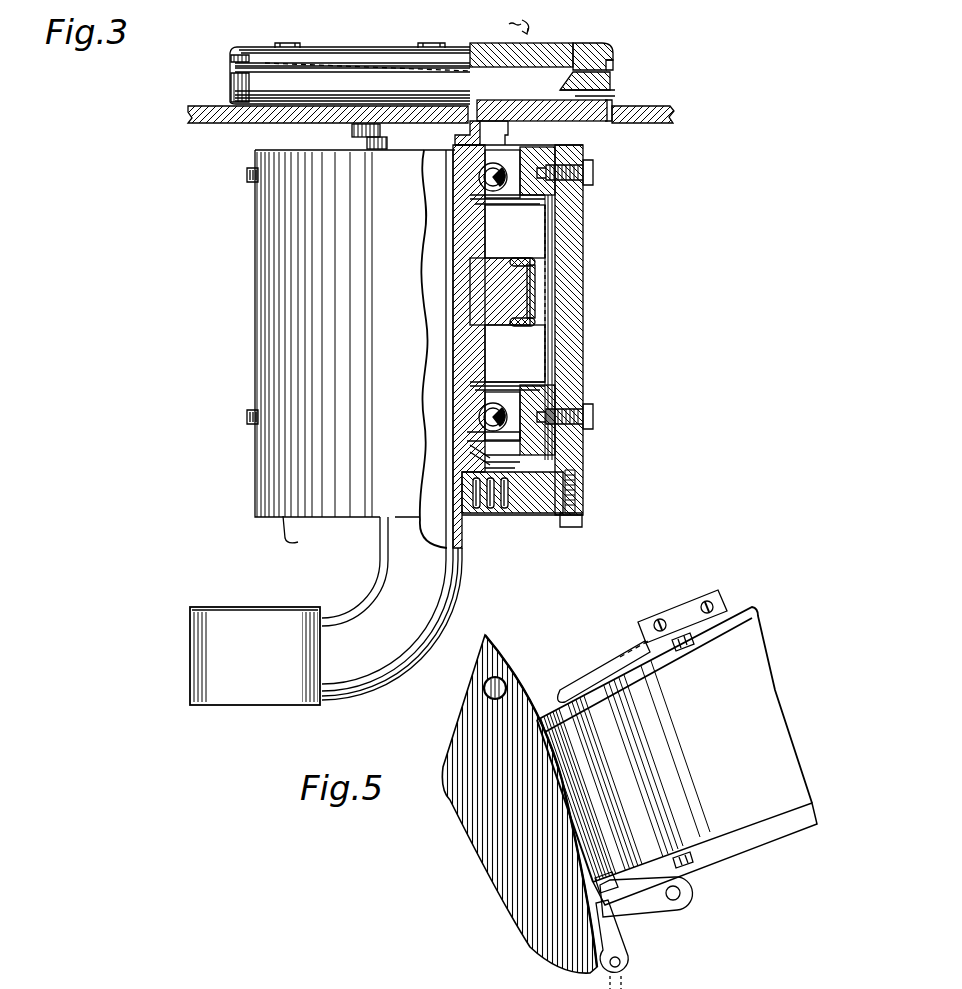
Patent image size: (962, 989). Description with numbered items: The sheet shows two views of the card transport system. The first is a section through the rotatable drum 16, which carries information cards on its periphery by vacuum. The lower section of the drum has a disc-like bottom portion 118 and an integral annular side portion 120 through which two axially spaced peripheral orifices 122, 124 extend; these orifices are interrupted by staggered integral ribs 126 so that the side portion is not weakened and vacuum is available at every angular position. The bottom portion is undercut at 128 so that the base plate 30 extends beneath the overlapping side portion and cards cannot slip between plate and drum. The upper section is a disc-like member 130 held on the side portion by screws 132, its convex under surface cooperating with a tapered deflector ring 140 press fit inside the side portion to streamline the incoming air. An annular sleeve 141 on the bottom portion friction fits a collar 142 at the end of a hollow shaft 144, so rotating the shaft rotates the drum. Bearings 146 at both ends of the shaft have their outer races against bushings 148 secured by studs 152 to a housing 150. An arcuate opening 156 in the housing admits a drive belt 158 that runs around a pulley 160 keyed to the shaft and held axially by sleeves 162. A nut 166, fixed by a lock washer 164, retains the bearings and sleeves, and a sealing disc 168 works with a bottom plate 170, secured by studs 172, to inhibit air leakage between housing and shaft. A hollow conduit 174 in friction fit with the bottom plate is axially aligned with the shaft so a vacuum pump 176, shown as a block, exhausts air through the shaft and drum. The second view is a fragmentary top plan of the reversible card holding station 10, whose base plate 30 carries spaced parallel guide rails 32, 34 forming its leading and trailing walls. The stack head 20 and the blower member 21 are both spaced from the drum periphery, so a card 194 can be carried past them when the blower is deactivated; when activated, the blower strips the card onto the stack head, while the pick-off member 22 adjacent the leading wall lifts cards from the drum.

In FIG. 5, the reversible card holding station 10 is at (774, 755).
In FIG. 3, the drum 16 is at (517, 20).
In FIG. 5, the drum 16 is at (527, 945).
In FIG. 5, the stack head 20 is at (665, 903).
In FIG. 5, the blower member 21 is at (639, 952).
In FIG. 5, the pick-off member 22 is at (604, 680).
In FIG. 3, the base plate 30 is at (236, 116).
In FIG. 5, the guide rail 32 is at (735, 622).
In FIG. 5, the guide rail 34 is at (762, 836).
In FIG. 3, the disc-like bottom portion 118 is at (490, 44).
In FIG. 3, the annular side portion 120 is at (612, 79).
In FIG. 3, the peripheral orifice 122 is at (315, 62).
In FIG. 3, the peripheral orifice 124 is at (368, 97).
In FIG. 3, the ribs 126 is at (334, 94).
In FIG. 3, the undercut 128 is at (606, 121).
In FIG. 3, the disc-like member 130 is at (236, 49).
In FIG. 3, the screws 132 is at (283, 43).
In FIG. 3, the deflector ring 140 is at (584, 44).
In FIG. 3, the annular sleeve 141 is at (505, 140).
In FIG. 3, the collar 142 is at (481, 128).
In FIG. 3, the hollow shaft 144 is at (490, 437).
In FIG. 3, the bearings 146 is at (490, 177).
In FIG. 3, the bushings 148 is at (535, 196).
In FIG. 3, the housing 150 is at (300, 203).
In FIG. 3, the studs 152 is at (247, 175).
In FIG. 3, the arcuate opening 156 is at (546, 312).
In FIG. 3, the drive belt 158 is at (532, 268).
In FIG. 3, the pulley 160 is at (512, 292).
In FIG. 3, the sleeves 162 is at (540, 230).
In FIG. 3, the lock washer 164 is at (476, 452).
In FIG. 3, the nut 166 is at (486, 459).
In FIG. 3, the sealing disc 168 is at (515, 498).
In FIG. 3, the bottom plate 170 is at (576, 495).
In FIG. 3, the studs 172 is at (582, 519).
In FIG. 3, the hollow conduit 174 is at (456, 592).
In FIG. 3, the vacuum pump 176 is at (300, 612).
In FIG. 5, the card 194 is at (514, 662).